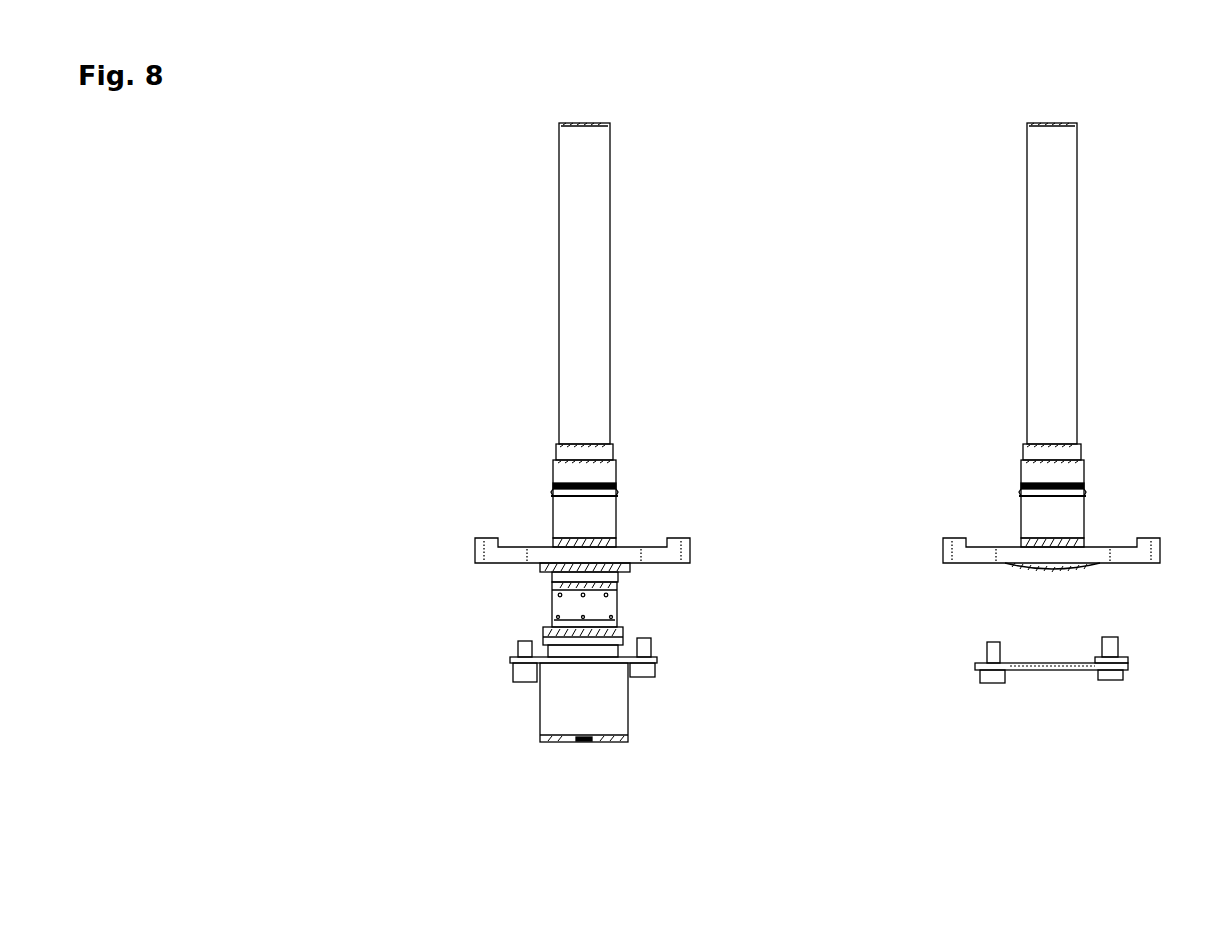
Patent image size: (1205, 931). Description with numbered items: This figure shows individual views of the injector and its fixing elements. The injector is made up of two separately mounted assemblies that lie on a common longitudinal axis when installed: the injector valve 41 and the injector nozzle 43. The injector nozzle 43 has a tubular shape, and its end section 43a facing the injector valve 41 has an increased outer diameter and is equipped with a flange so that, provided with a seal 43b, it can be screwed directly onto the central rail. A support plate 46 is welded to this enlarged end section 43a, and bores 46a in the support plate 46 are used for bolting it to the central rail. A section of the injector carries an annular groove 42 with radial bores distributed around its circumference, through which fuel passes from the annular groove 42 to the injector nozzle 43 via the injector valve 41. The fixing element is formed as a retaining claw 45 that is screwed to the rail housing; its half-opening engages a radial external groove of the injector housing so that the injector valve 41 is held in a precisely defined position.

The injector valve 41 is at (524, 762).
The annular groove 42 is at (640, 606).
The injector nozzle 43 is at (683, 330).
The end section 43a is at (683, 491).
The seal 43b is at (526, 490).
The retaining claw 45 is at (679, 660).
The support plate 46 is at (926, 512).
The bores 46a is at (674, 518).